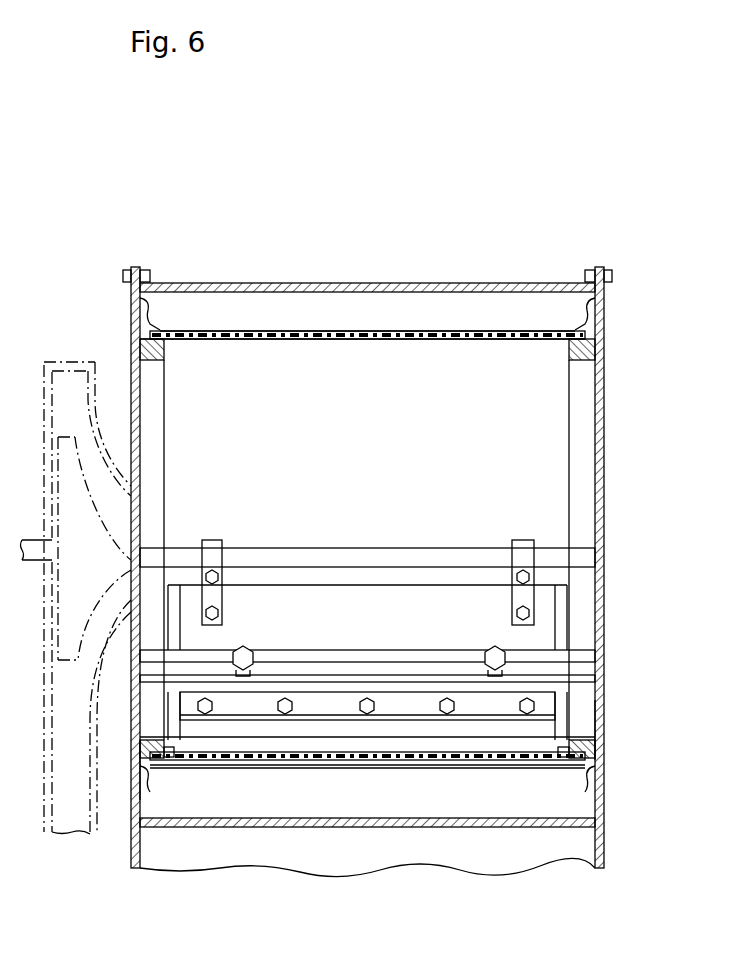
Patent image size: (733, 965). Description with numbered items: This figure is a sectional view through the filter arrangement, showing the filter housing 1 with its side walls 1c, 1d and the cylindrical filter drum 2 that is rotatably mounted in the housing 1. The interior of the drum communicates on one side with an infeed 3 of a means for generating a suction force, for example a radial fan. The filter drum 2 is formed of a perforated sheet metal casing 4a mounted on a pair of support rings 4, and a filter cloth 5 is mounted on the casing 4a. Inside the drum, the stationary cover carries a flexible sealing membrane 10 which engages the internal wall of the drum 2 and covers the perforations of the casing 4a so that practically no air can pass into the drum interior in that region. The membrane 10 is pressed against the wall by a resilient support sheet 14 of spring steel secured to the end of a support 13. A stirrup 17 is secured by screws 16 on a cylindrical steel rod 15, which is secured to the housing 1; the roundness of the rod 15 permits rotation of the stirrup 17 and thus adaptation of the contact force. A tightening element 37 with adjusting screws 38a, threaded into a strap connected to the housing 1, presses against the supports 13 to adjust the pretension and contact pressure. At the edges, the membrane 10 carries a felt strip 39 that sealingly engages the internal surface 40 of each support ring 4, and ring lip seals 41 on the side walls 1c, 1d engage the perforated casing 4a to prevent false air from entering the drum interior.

The filter housing 1 is at (606, 300).
The housing portion 1c is at (604, 730).
The housing portion 1d is at (128, 738).
The filter drum 2 is at (395, 342).
The infeed 3 is at (133, 512).
The support ring 4 is at (165, 356).
The perforated sheet metal casing 4a is at (351, 340).
The filter cloth 5 is at (320, 332).
The sealing membrane 10 is at (395, 760).
The support 13 is at (400, 600).
The resilient support sheet 14 is at (325, 737).
The cylindrical steel rod 15 is at (303, 558).
The screw 16 is at (218, 575).
The stirrup 17 is at (212, 548).
The tightening element 37 is at (325, 668).
The adjusting screw 38a is at (245, 655).
The felt strip 39 is at (173, 750).
The internal surface 40 is at (170, 340).
The ring lip seal 41 is at (149, 321).